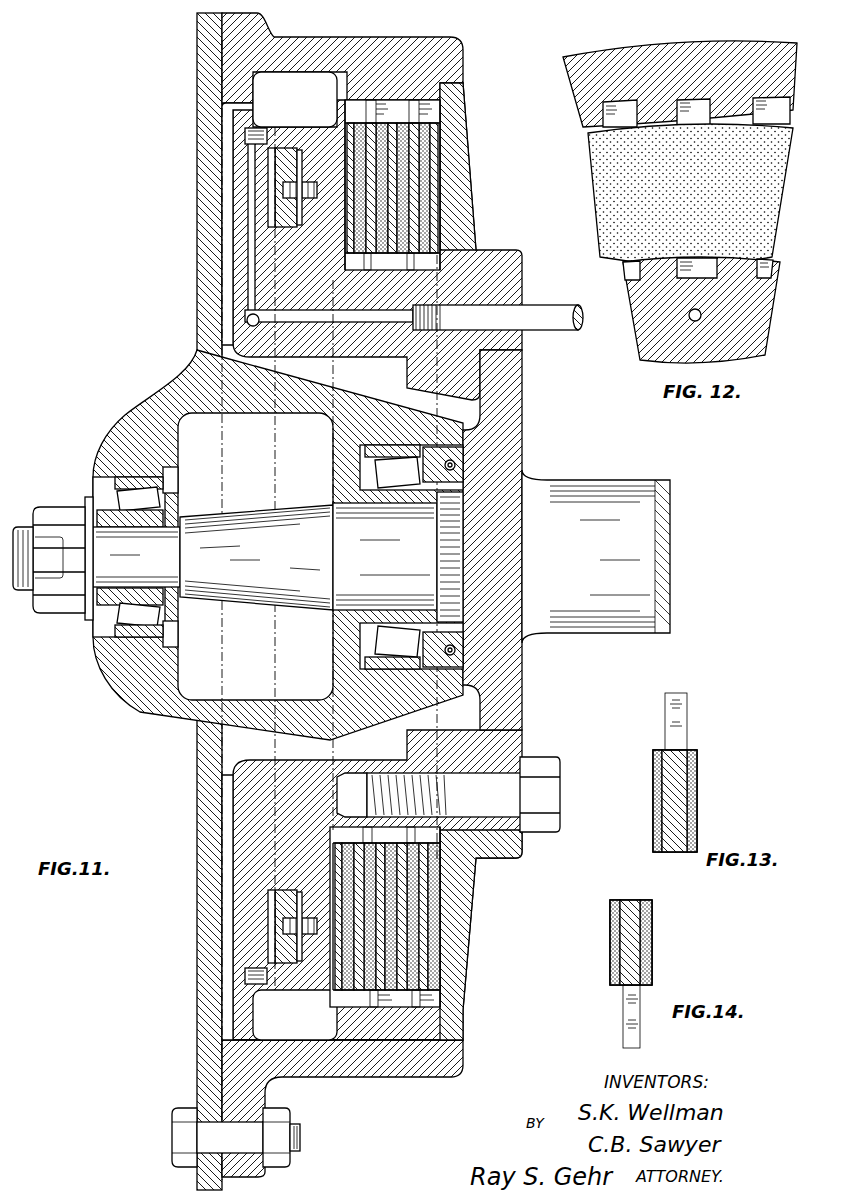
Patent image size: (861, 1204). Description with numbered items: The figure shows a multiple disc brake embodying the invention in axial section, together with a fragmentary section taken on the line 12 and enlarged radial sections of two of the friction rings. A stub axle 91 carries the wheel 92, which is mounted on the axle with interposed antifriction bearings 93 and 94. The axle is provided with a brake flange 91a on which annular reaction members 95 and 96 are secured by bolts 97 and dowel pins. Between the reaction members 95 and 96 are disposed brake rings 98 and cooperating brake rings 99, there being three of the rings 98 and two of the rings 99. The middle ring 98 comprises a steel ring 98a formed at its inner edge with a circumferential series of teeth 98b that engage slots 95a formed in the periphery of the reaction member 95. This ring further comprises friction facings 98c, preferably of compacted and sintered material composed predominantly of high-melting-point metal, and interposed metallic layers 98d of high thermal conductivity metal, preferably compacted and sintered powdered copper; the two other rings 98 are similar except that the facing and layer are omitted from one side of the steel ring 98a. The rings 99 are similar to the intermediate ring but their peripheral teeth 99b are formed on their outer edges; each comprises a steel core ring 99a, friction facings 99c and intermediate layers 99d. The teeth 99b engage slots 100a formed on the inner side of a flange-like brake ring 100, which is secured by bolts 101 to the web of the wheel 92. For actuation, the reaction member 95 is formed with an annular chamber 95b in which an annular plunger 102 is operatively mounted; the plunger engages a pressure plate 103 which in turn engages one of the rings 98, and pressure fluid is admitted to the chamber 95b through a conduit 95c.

In FIG. 11, the section line 12 is at (392, 22).
In FIG. 11, the stub axle 91 is at (598, 492).
In FIG. 11, the brake flange 91a is at (525, 407).
In FIG. 11, the wheel 92 is at (165, 395).
In FIG. 11, the antifriction bearing 93 is at (118, 488).
In FIG. 11, the antifriction bearing 94 is at (362, 470).
In FIG. 11, the annular reaction member 95 is at (393, 352).
In FIG. 12, the annular reaction member 95 is at (765, 347).
In FIG. 12, the slots 95a is at (703, 278).
In FIG. 11, the annular chamber 95b is at (268, 160).
In FIG. 11, the conduit 95c is at (248, 275).
In FIG. 11, the annular reaction member 96 is at (470, 190).
In FIG. 11, the bolts 97 is at (542, 760).
In FIG. 11, the brake rings 98 is at (405, 258).
In FIG. 14, the brake rings 98 is at (634, 970).
In FIG. 14, the steel ring 98a is at (630, 965).
In FIG. 12, the teeth 98b is at (684, 270).
In FIG. 14, the teeth 98b is at (625, 1035).
In FIG. 12, the friction facings 98c is at (628, 214).
In FIG. 14, the friction facings 98c is at (610, 933).
In FIG. 14, the metallic layers 98d is at (612, 905).
In FIG. 11, the brake rings 99 is at (414, 100).
In FIG. 13, the brake rings 99 is at (687, 764).
In FIG. 13, the steel core ring 99a is at (675, 825).
In FIG. 12, the peripheral teeth 99b is at (630, 100).
In FIG. 13, the peripheral teeth 99b is at (680, 713).
In FIG. 13, the friction facings 99c is at (655, 760).
In FIG. 13, the intermediate layers 99d is at (656, 793).
In FIG. 11, the brake ring 100 is at (450, 40).
In FIG. 12, the brake ring 100 is at (586, 62).
In FIG. 12, the slots 100a is at (700, 98).
In FIG. 11, the bolts 101 is at (178, 1135).
In FIG. 11, the annular plunger 102 is at (282, 215).
In FIG. 11, the pressure plate 103 is at (327, 120).